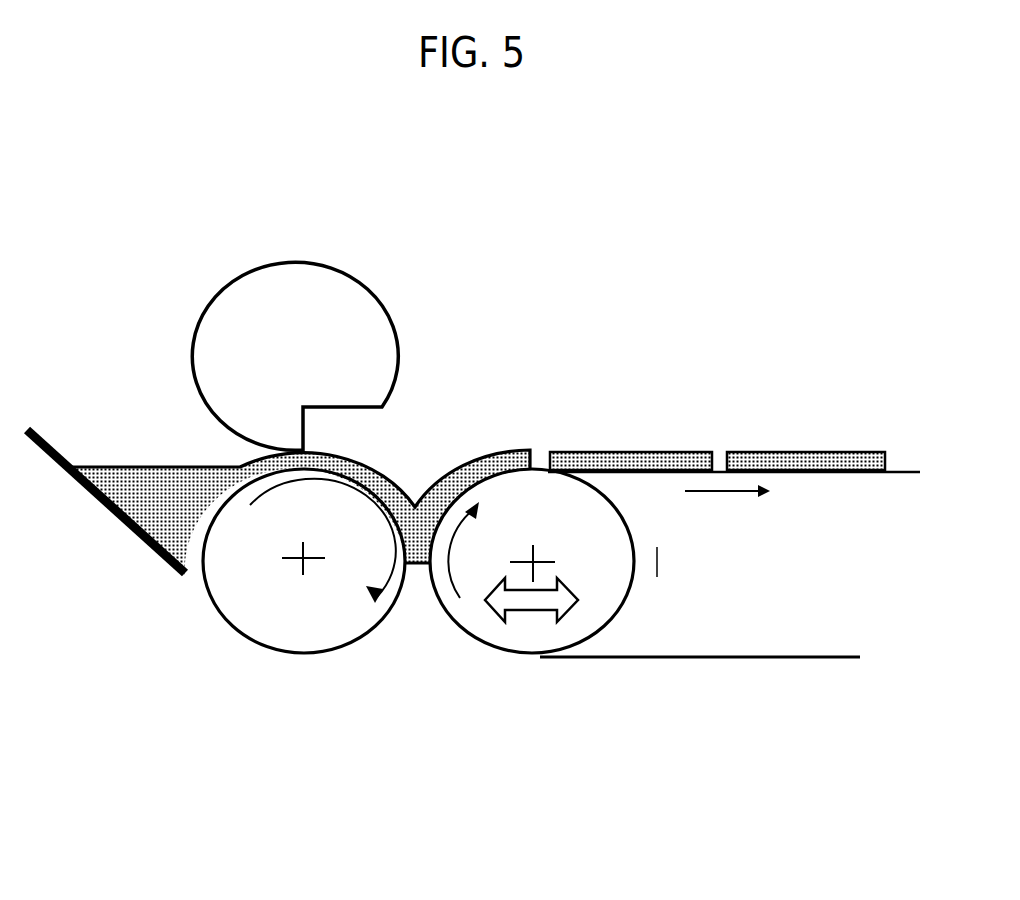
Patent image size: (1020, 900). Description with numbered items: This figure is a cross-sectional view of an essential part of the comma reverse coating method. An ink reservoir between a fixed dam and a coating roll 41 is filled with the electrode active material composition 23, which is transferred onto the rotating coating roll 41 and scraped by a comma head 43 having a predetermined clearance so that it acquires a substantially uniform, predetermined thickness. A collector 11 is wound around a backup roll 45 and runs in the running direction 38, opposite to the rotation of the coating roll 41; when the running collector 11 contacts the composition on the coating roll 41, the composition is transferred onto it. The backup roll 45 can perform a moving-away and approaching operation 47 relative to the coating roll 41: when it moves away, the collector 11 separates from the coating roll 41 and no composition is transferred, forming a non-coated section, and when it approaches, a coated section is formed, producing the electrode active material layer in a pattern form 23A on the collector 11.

The collector 11 is at (620, 473).
The electrode active material layer composition 23 is at (123, 490).
The electrode active material layer (in a pattern form) 23A is at (585, 462).
The running (flow) direction 38 is at (801, 506).
The coating roll 41 is at (255, 610).
The comma head 43 is at (340, 313).
The backup roll 45 is at (597, 587).
The moving-away and approaching operation 47 is at (525, 598).